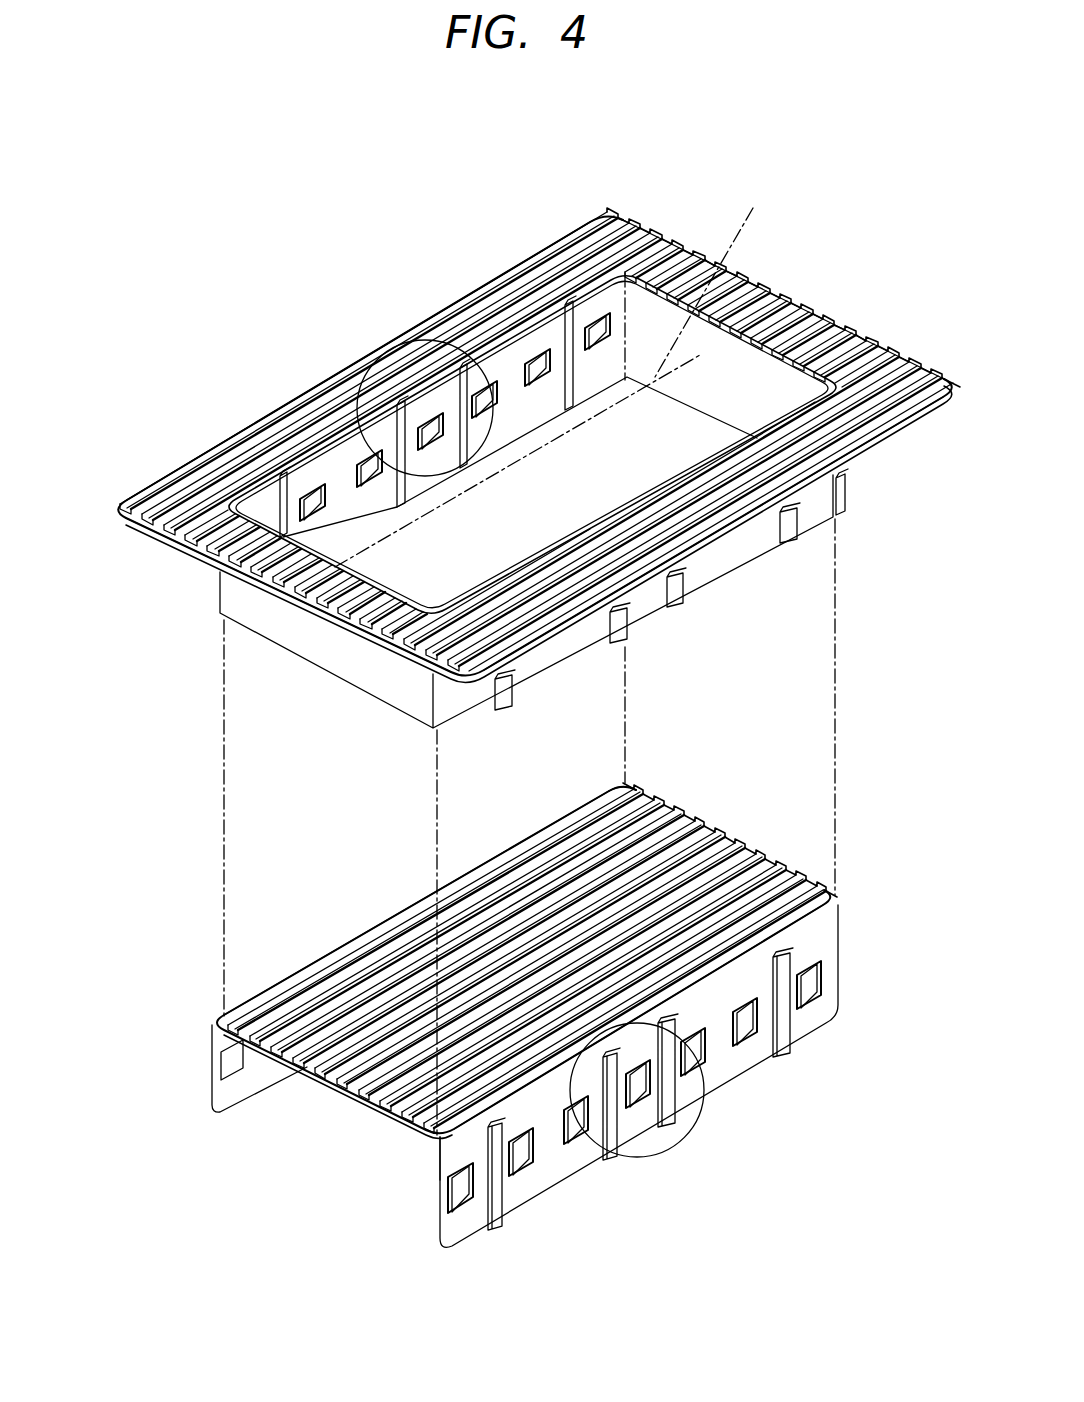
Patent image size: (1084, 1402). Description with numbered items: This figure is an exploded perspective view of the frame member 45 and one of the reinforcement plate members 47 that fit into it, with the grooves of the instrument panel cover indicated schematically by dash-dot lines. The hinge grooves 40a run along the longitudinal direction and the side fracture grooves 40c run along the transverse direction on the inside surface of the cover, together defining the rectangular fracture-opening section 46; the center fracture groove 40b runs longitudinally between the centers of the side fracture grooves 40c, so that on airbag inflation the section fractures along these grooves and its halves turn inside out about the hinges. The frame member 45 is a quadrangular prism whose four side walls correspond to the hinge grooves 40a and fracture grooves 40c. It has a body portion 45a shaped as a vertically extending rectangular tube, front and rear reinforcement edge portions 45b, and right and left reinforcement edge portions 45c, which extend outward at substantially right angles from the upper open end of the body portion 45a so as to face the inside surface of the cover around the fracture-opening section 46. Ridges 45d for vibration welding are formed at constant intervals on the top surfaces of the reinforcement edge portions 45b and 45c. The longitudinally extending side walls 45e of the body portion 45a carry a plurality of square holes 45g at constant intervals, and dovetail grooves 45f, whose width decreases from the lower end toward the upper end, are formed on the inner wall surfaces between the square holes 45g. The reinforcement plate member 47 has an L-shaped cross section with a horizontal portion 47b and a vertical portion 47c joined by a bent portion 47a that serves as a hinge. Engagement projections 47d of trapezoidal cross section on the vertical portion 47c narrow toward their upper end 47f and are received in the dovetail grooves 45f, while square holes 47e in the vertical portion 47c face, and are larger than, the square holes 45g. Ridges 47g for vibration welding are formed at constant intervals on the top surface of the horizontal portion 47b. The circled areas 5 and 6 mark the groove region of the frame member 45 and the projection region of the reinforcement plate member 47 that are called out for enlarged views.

The frame member 45 is at (563, 197).
The fracture-opening section 46 is at (498, 267).
The body portion 45a is at (293, 637).
The front and rear reinforcement edge portions 45b is at (447, 297).
The right and left reinforcement edge portions 45c is at (832, 302).
The ridges for vibration welding 45d is at (200, 453).
The longitudinally extending side walls 45e is at (507, 427).
The dovetail grooves 45f is at (574, 374).
The square holes 45g is at (543, 390).
The hinge grooves 40a is at (297, 397).
The center fracture groove 40b is at (694, 240).
The side fracture grooves 40c is at (390, 580).
The detail region of FIG. 5 is at (458, 485).
The reinforcement plate member 47 is at (210, 1022).
The bent portion 47a is at (390, 913).
The horizontal portion 47b is at (330, 995).
The vertical portion 47c is at (230, 1097).
The engagement projections 47d is at (502, 1217).
The square holes 47e is at (587, 1150).
The upper end 47f is at (433, 1173).
The ridges for vibration welding 47g is at (700, 812).
The detail region of FIG. 6 is at (670, 1163).